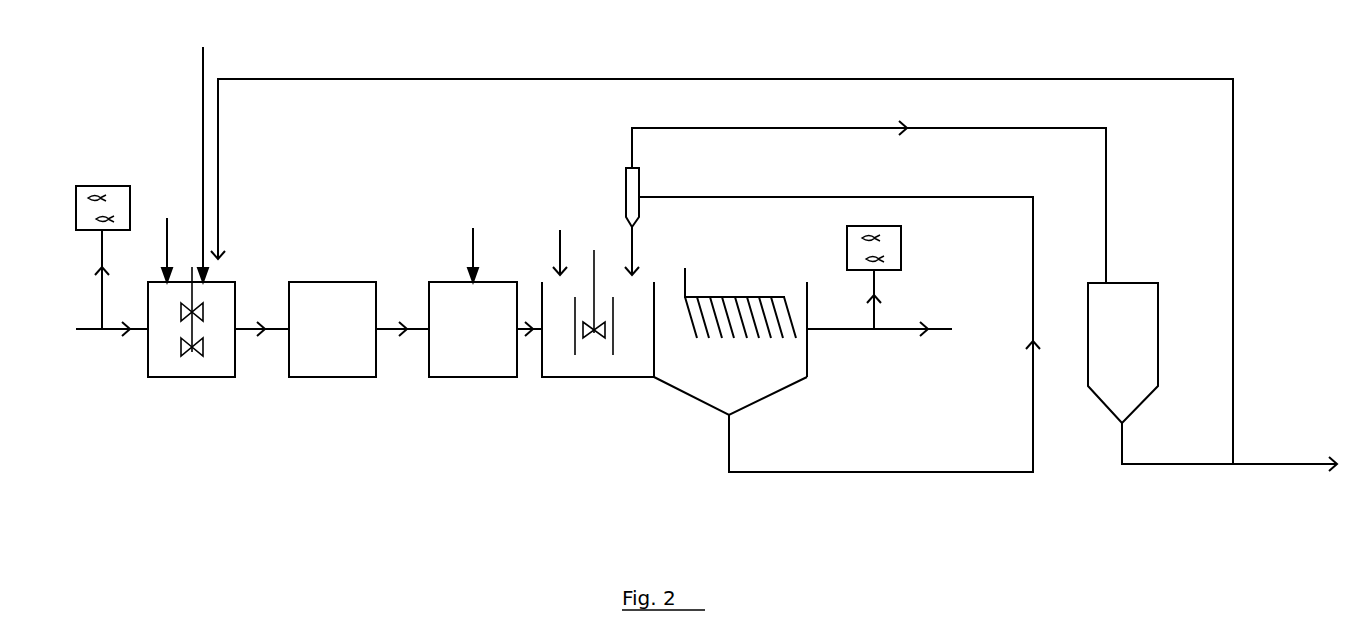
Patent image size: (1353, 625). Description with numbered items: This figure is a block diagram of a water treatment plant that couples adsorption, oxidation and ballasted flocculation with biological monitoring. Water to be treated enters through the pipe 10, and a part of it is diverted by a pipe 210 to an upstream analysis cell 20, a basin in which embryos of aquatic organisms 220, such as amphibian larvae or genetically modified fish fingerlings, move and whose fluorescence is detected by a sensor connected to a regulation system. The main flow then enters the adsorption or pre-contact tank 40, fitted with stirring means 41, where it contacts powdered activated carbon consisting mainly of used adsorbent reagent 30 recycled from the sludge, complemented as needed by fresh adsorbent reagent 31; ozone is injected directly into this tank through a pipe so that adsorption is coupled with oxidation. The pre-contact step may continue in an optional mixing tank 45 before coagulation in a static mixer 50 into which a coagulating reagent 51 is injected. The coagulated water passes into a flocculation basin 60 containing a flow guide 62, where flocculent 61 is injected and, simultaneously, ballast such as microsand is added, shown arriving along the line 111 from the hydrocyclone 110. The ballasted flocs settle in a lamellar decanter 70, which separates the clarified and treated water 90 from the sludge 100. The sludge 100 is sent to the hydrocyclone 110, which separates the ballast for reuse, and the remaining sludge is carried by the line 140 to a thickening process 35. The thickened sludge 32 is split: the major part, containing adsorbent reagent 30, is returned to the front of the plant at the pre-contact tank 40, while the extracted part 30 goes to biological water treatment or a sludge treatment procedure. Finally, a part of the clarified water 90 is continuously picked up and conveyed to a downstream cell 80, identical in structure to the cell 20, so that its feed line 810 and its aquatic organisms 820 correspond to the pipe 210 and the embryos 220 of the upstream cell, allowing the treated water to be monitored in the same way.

The pipe 10 is at (112, 342).
The upstream analysis cell 20 is at (88, 186).
The embryos of aquatic organisms 220 is at (107, 195).
The pipe 210 is at (120, 279).
The fresh adsorbent reagent 31 is at (165, 226).
The used adsorbent reagent 30 is at (203, 63).
The adsorption tank 40 is at (195, 378).
The stirring means 41 is at (182, 348).
The mixing tank 45 is at (337, 378).
The static mixer 50 is at (473, 378).
The coagulating reagent 51 is at (474, 244).
The flocculation basin 60 is at (556, 378).
The flocculent 61 is at (561, 240).
The flow guide 62 is at (613, 333).
The lamellar decanter 70 is at (765, 398).
The cell 80 is at (903, 245).
The fish in outlet sensor 820 is at (852, 237).
The outlet sensor feed line 810 is at (893, 299).
The clarified and treated water 90 is at (879, 343).
The sludge 100 is at (1033, 412).
The hydrocyclone 110 is at (626, 177).
The sludge return line 111 is at (632, 250).
The sludge transfer line 140 is at (990, 125).
The thickening process 35 is at (1101, 404).
The thickened sludge 32 is at (1158, 465).